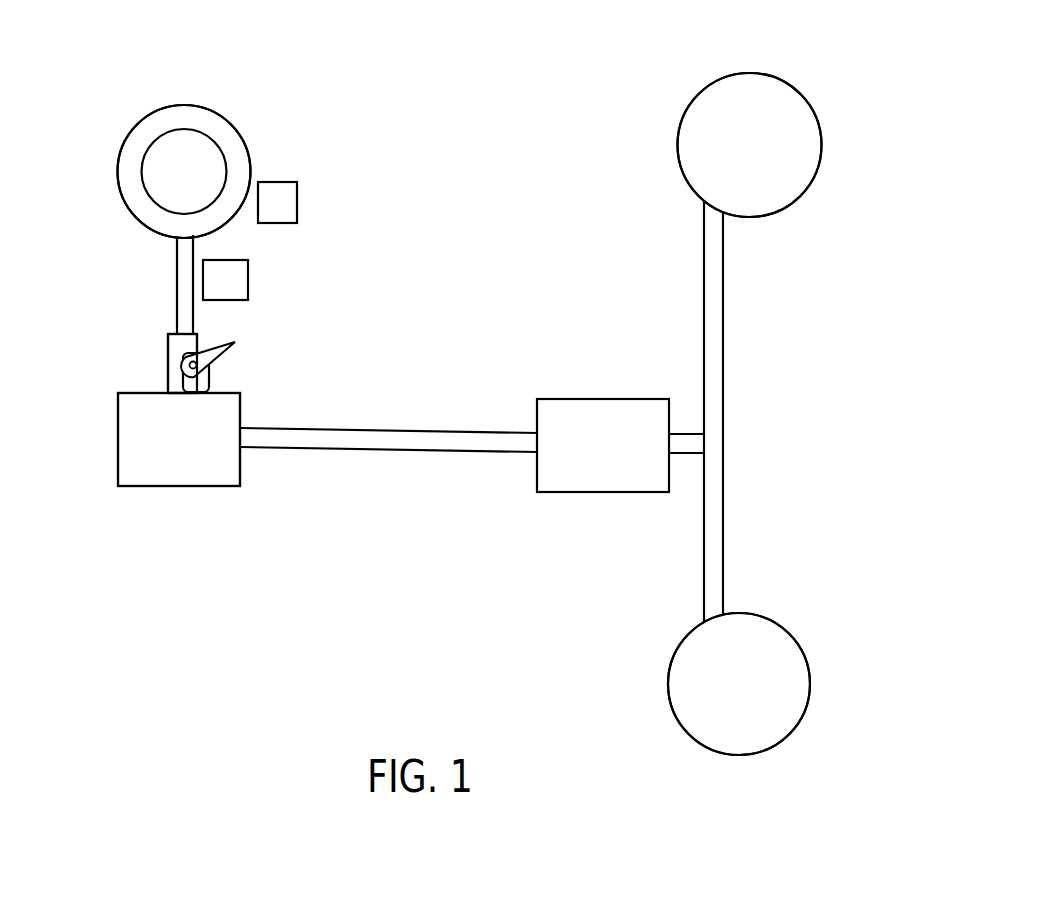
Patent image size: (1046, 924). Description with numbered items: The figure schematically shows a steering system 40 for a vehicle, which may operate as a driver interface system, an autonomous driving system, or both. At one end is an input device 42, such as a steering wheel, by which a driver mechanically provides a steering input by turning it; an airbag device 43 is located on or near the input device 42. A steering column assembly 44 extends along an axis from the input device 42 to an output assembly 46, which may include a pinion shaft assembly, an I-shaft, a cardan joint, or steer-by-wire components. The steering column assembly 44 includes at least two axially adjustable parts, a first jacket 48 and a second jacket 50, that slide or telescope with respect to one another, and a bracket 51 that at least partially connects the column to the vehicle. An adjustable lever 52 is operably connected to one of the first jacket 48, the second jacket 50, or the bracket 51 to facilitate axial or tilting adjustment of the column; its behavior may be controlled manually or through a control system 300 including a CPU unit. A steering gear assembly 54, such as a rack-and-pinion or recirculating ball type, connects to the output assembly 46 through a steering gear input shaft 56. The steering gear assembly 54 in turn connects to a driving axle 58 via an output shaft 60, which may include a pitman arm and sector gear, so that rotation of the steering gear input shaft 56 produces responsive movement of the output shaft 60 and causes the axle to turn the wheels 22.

The steering system 40 is at (838, 88).
The wheels 22 is at (736, 165).
The driving axle 58 is at (712, 497).
The output shaft 60 is at (692, 443).
The steering gear assembly 54 is at (590, 463).
The steering gear input shaft 56 is at (480, 432).
The output assembly 46 is at (165, 457).
The second jacket 50 is at (150, 374).
The bracket 51 is at (210, 378).
The adjustable lever 52 is at (257, 322).
The first jacket 48 is at (150, 269).
The input device 42 is at (117, 180).
The airbag device 43 is at (266, 220).
The control system 300 is at (195, 332).
The steering column assembly 44 is at (96, 296).